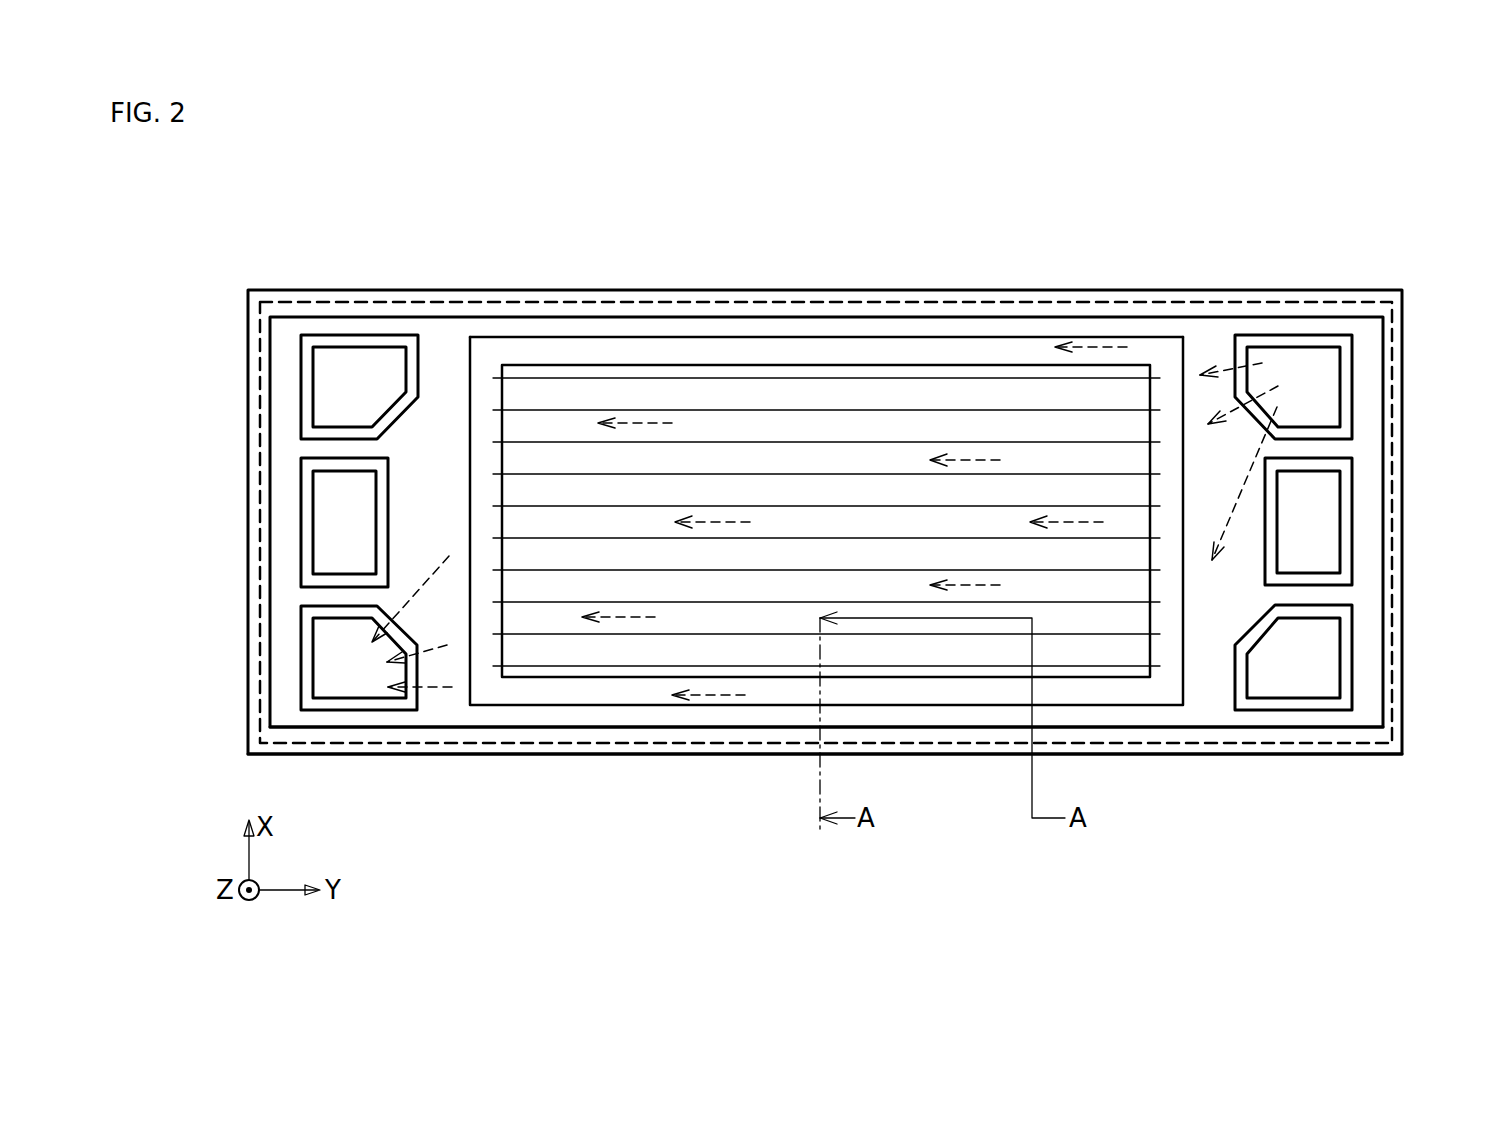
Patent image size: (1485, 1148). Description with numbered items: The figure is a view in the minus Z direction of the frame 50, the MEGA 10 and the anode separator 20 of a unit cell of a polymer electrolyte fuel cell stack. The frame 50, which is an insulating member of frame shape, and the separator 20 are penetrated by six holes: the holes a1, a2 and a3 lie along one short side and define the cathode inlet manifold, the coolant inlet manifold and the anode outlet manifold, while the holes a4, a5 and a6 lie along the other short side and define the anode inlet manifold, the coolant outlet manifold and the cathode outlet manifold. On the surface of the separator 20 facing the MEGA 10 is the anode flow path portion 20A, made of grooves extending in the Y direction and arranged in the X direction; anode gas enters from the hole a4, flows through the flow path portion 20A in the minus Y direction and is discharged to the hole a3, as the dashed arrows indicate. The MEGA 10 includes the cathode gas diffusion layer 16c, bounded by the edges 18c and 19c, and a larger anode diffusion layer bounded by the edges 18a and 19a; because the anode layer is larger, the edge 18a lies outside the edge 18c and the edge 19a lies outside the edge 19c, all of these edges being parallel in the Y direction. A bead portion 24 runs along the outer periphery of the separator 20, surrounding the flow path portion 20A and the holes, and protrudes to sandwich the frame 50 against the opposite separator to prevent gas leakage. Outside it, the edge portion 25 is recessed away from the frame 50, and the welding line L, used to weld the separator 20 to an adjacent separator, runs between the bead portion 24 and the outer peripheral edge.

The membrane electrode gas diffusion layer assembly (MEGA) 10 is at (927, 705).
The anode separator 20 is at (869, 462).
The frame 50 is at (1390, 288).
The anode flow path portion 20A is at (720, 412).
The edge of anode gas diffusion layer 19a is at (962, 337).
The edge of cathode gas diffusion layer 19c is at (865, 365).
The edge of anode gas diffusion layer 18a is at (607, 705).
The edge of cathode gas diffusion layer 18c is at (783, 677).
The cathode gas diffusion layer 16c is at (1112, 670).
The bead portion 24 is at (403, 727).
The edge portion 25 is at (670, 754).
The welding line L is at (1345, 743).
The hole a1 is at (347, 387).
The hole a2 is at (347, 522).
The hole a3 is at (347, 652).
The hole a4 is at (1305, 388).
The hole a5 is at (1305, 522).
The hole a6 is at (1305, 652).